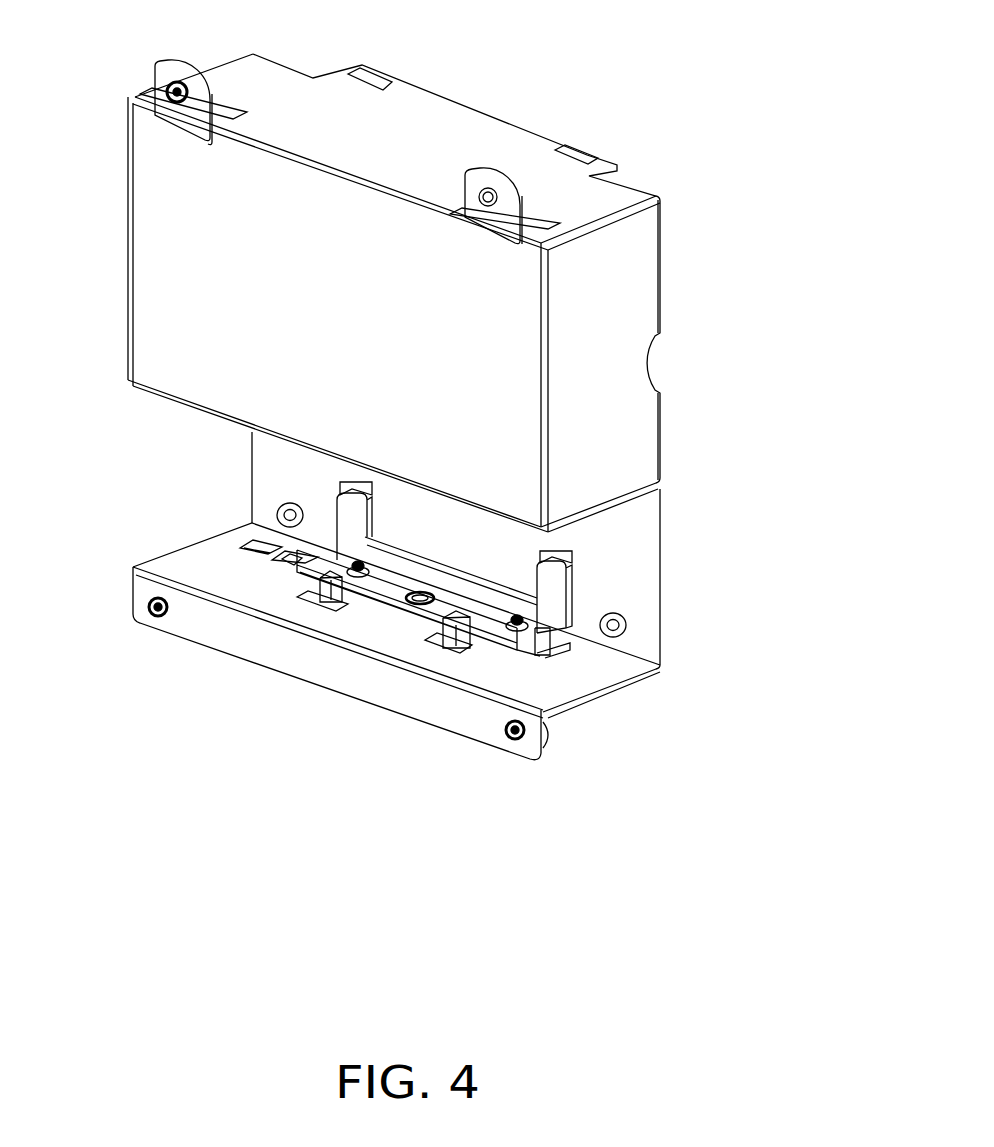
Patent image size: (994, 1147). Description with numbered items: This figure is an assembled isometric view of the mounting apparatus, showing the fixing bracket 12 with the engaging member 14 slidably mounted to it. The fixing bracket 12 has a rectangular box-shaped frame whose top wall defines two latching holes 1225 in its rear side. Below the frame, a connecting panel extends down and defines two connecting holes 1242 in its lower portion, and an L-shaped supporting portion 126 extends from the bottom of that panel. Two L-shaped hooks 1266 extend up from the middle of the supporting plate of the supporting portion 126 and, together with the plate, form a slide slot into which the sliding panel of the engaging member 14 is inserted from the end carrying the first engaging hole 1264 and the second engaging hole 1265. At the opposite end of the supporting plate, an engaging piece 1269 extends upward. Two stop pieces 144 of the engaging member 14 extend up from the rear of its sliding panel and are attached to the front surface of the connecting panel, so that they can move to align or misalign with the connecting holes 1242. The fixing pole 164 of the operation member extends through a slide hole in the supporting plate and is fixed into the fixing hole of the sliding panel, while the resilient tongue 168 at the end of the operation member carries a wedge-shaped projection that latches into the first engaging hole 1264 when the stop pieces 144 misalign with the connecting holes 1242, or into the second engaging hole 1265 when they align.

The fixing bracket 12 is at (432, 120).
The latching holes 1225 is at (582, 155).
The supporting portion 126 is at (613, 683).
The stop pieces 144 is at (556, 590).
The connecting holes 1242 is at (555, 562).
The first engaging hole 1264 is at (258, 545).
The second engaging hole 1265 is at (275, 562).
The resilient tongue 168 is at (290, 563).
The engaging member 14 is at (377, 595).
The hooks 1266 is at (325, 597).
The fixing pole 164 is at (420, 604).
The engaging piece 1269 is at (543, 645).